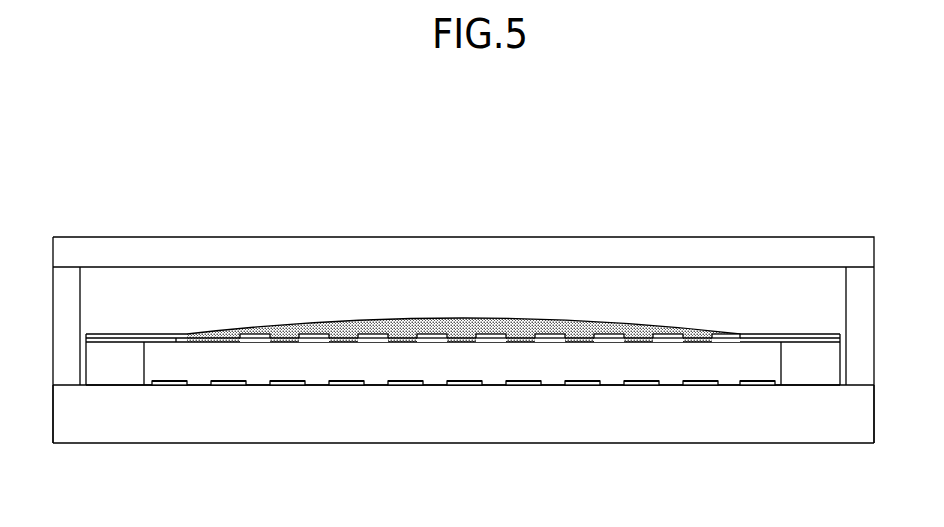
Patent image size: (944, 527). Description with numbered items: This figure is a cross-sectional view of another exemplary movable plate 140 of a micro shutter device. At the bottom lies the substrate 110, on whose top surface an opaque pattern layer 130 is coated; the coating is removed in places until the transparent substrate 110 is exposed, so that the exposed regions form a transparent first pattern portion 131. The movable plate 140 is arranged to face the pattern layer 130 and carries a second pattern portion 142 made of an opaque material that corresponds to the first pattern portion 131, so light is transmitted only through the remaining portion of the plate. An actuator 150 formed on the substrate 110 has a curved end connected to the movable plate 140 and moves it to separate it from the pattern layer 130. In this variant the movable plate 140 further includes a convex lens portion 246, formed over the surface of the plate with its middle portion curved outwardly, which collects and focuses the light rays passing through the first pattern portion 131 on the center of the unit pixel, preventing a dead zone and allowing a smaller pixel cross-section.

The substrate 110 is at (845, 430).
The pattern layer 130 is at (766, 402).
The first pattern portion 131 is at (727, 384).
The movable plate 140 is at (520, 363).
The second pattern portion 142 is at (610, 322).
The actuator 150 is at (808, 350).
The convex lens portion 246 is at (412, 322).